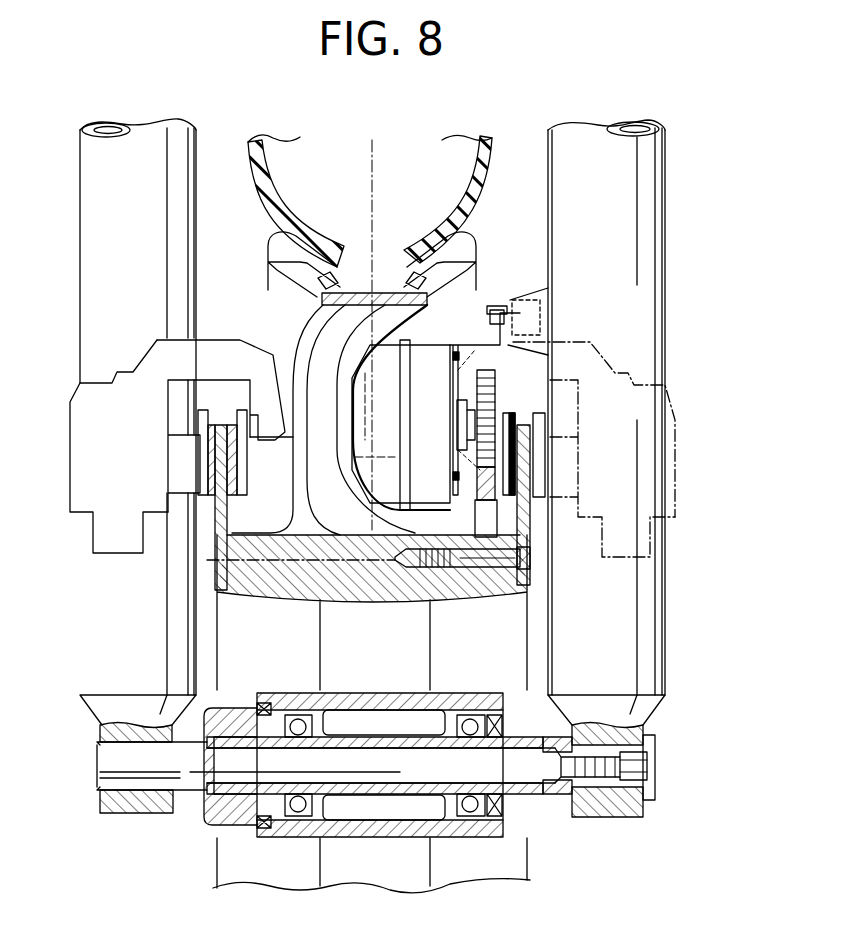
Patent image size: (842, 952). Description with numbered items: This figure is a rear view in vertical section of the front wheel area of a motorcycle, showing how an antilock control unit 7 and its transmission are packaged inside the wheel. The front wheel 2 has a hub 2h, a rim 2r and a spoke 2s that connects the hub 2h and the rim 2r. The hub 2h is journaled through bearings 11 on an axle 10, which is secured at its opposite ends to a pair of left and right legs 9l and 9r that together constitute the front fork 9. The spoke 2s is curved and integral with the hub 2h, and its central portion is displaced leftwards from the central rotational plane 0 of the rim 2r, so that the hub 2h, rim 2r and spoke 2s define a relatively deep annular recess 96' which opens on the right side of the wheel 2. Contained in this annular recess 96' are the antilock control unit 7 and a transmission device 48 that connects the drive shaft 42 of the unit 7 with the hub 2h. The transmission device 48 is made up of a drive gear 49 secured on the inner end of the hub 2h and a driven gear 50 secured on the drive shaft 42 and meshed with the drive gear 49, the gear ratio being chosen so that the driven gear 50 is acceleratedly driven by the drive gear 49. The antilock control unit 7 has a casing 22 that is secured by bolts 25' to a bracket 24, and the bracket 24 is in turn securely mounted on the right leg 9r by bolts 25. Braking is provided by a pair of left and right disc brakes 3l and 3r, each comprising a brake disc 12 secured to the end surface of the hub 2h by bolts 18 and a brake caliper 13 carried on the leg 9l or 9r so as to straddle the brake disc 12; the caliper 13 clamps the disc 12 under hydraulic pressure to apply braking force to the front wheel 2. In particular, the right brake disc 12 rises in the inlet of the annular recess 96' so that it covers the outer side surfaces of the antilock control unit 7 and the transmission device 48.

The front wheel 2 is at (436, 136).
The hub 2h is at (437, 693).
The spoke 2s is at (303, 344).
The rim 2r is at (435, 299).
The central rotational plane 0 is at (378, 218).
The left disc brake 3l is at (152, 336).
The right disc brake 3r is at (538, 516).
The antilock control unit 7 is at (419, 344).
The front fork 9 is at (672, 202).
The left leg 9l is at (88, 264).
The right leg 9r is at (652, 266).
The axle 10 is at (108, 758).
The bearings 11 is at (297, 698).
The brake disc 12 is at (222, 530).
The brake caliper 13 is at (136, 368).
The bolts 18 is at (298, 562).
The casing 22 is at (425, 503).
The bracket 24 is at (460, 346).
The bolts 25 is at (516, 316).
The bolts 25' is at (438, 418).
The drive shaft 42 is at (456, 432).
The transmission device 48 is at (502, 382).
The drive gear 49 is at (478, 502).
The driven gear 50 is at (497, 395).
The annular recess 96' is at (435, 550).